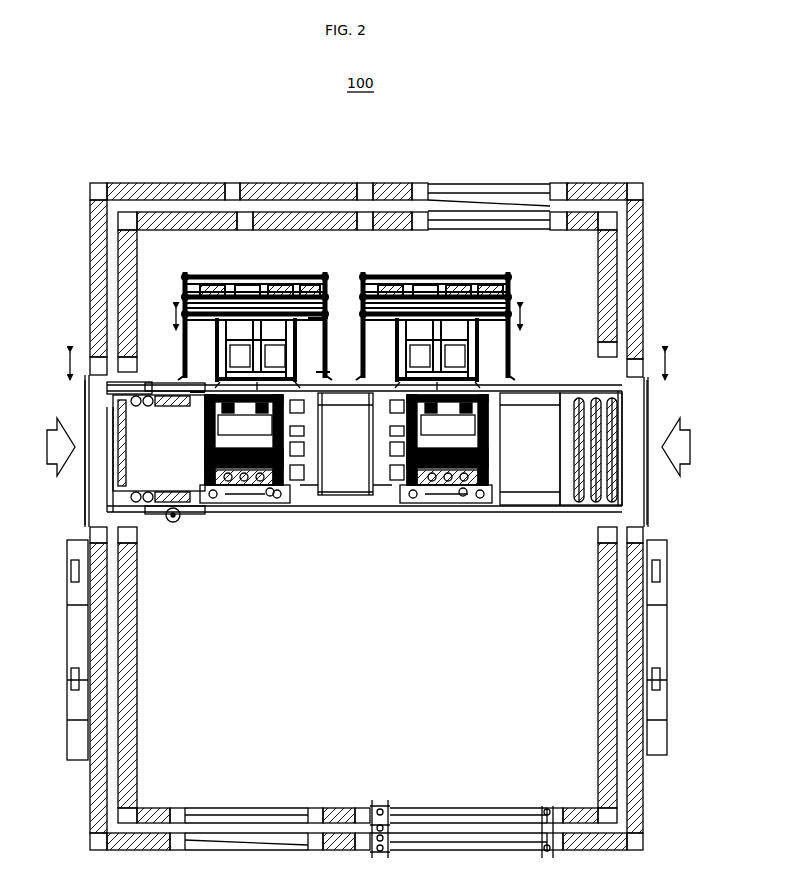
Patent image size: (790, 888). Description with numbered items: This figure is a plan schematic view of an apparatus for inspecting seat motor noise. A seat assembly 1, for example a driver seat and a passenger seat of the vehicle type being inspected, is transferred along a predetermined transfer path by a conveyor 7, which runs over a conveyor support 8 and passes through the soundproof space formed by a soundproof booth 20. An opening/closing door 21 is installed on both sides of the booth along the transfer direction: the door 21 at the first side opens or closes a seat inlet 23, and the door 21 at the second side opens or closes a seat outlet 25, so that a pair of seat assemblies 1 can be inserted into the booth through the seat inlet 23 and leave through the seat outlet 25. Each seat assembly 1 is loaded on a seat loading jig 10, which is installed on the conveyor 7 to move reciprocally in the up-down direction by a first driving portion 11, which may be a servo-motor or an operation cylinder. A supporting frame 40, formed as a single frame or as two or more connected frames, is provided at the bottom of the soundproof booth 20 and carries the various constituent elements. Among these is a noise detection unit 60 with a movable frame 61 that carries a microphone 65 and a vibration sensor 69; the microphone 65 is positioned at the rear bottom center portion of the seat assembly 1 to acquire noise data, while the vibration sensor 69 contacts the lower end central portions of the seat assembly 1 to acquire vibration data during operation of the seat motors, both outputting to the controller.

The soundproof booth 20 is at (90, 251).
The opening/closing door 21 is at (85, 515).
The seat inlet 23 is at (100, 397).
The seat outlet 25 is at (632, 397).
The conveyor 7 is at (372, 470).
The conveyor support 8 is at (523, 500).
The seat assembly 1 is at (196, 463).
The seat loading jig 10 is at (271, 500).
The first driving portion 11 is at (305, 503).
The supporting frame 40 is at (200, 352).
The noise detection unit 60 is at (348, 288).
The movable frame 61 is at (267, 290).
The microphone 65 is at (328, 322).
The vibration sensor 69 is at (326, 358).